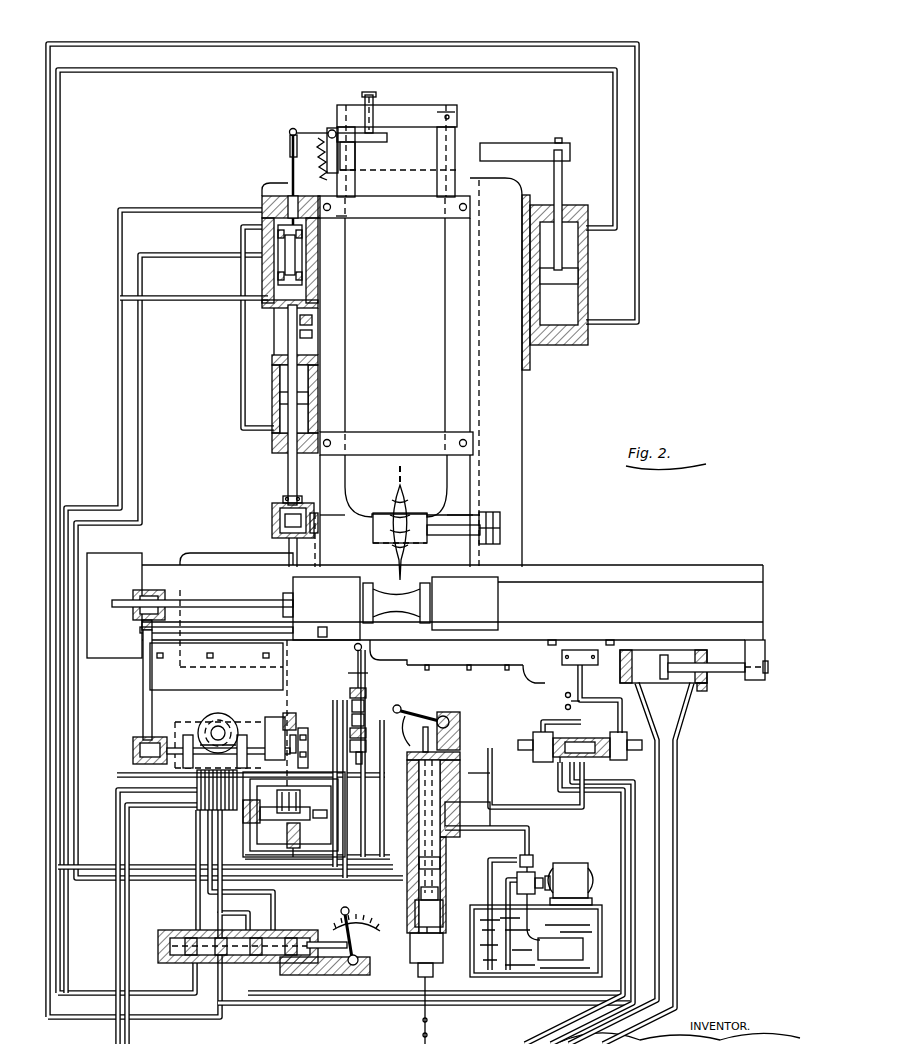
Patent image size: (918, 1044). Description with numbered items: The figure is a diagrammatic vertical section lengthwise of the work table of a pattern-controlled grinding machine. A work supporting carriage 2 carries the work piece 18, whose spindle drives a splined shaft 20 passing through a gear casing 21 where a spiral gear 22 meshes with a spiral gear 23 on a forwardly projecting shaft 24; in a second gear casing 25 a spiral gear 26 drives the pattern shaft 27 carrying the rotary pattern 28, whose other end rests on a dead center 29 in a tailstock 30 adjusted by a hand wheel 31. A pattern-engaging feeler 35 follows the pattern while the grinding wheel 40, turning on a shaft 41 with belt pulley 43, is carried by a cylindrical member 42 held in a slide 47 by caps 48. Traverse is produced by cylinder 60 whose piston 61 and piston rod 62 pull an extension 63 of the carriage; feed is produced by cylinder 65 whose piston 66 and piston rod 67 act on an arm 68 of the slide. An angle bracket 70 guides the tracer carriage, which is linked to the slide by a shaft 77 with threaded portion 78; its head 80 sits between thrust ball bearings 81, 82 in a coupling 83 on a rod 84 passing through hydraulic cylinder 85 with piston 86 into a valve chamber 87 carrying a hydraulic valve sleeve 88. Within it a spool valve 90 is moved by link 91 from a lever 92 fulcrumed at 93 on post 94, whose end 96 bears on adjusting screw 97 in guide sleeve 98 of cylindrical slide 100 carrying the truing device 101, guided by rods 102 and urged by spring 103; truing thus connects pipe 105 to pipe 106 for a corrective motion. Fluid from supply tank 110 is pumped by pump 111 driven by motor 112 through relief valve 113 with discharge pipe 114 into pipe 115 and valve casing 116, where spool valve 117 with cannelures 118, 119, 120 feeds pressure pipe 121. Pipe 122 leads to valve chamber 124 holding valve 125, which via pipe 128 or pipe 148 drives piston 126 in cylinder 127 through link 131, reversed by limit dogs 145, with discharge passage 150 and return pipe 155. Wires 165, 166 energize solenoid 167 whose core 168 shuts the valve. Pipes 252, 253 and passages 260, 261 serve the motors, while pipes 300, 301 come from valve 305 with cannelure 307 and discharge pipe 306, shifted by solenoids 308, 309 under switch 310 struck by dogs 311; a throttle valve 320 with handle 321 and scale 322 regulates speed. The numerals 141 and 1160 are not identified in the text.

The work supporting carriage 2 is at (646, 566).
The work piece 18 is at (412, 603).
The splined shaft 20 is at (223, 601).
The gear casing 21 is at (163, 589).
The spiral gear 22 is at (148, 590).
The spiral gear 23 is at (140, 622).
The forwardly projecting shaft 24 is at (150, 676).
The gear casing 25 is at (134, 746).
The spiral gear 26 is at (136, 758).
The pattern shaft 27 is at (175, 757).
The rotary pattern 28 is at (205, 724).
The dead center 29 is at (262, 724).
The tailstock 30 is at (274, 716).
The hand wheel 31 is at (298, 738).
The pattern-engaging feeler 35 is at (218, 713).
The grinding wheel 40 is at (401, 577).
The shaft 41 is at (452, 526).
The cylindrical member 42 is at (435, 412).
The belt pulley 43 is at (499, 520).
The slide 47 is at (333, 347).
The caps 48 is at (422, 208).
The cylinder 60 is at (702, 690).
The piston 61 is at (665, 653).
The piston rod 62 is at (720, 663).
The extension 63 is at (759, 648).
The cylinder 65 is at (590, 308).
The piston 66 is at (574, 278).
The piston rod 67 is at (562, 205).
The arm 68 is at (532, 152).
The angle bracket 70 is at (355, 678).
The shaft 77 is at (292, 553).
The threaded portion 78 is at (294, 712).
The head 80 is at (273, 516).
The thrust ball bearing 81 is at (276, 527).
The thrust ball bearing 82 is at (283, 498).
The coupling 83 is at (316, 527).
The rod 84 is at (288, 413).
The hydraulic cylinder 85 is at (318, 377).
The piston 86 is at (308, 403).
The valve chamber 87 is at (318, 300).
The hydraulic valve sleeve 88 is at (312, 247).
The spool valve 90 is at (277, 242).
The link 91 is at (291, 170).
The lever 92 is at (322, 132).
The fulcrum 93 is at (336, 127).
The post 94 is at (342, 210).
The lever end 96 is at (380, 142).
The adjusting screw 97 is at (376, 101).
The guide sleeve 98 is at (457, 116).
The cylindrical slide 100 is at (425, 106).
The truing device 101 is at (482, 343).
The guide rods 102 is at (455, 152).
The spring 103 is at (318, 132).
The pipe 105 is at (168, 253).
The pipe 106 is at (243, 392).
The supply tank 110 is at (590, 908).
The pump 111 is at (547, 876).
The motor 112 is at (577, 868).
The pressure relief valve 113 is at (532, 871).
The discharge pipe 114 is at (519, 860).
The pipe 115 is at (468, 827).
The valve casing 116 is at (450, 793).
The spool valve 117 is at (418, 826).
The cannelure 118 is at (418, 793).
The cannelure 119 is at (436, 850).
The cannelure 120 is at (436, 880).
The pressure pipe 121 is at (416, 843).
The pipe 122 is at (380, 824).
The valve chamber 124 is at (364, 756).
The valve 125 is at (366, 707).
The piston 126 is at (252, 801).
The cylinder 127 is at (288, 835).
The pipe 128 is at (320, 864).
The link 131 is at (298, 806).
The conduit 141 is at (360, 728).
The limit dogs 145 is at (320, 647).
The pipe 148 is at (320, 818).
The discharge passage 150 is at (366, 817).
The return pipe 155 is at (478, 773).
The wire 165 is at (250, 1040).
The wire 166 is at (305, 1040).
The solenoid 167 is at (440, 935).
The core 168 is at (433, 972).
The pipe 252 is at (248, 913).
The pipe 253 is at (273, 892).
The passage 260 is at (518, 43).
The passage 261 is at (570, 69).
The pipe 300 is at (197, 825).
The pipe 301 is at (170, 835).
The valve 305 is at (590, 742).
The pipe 306 is at (562, 786).
The central cannelure 307 is at (600, 760).
The solenoid 308 is at (542, 729).
The solenoid 309 is at (630, 733).
The double actuating switch 310 is at (581, 649).
The dogs 311 is at (552, 640).
The throttle valve 320 is at (302, 942).
The actuating handle 321 is at (354, 919).
The graduated scale 322 is at (362, 940).
The lever 1160 is at (428, 716).